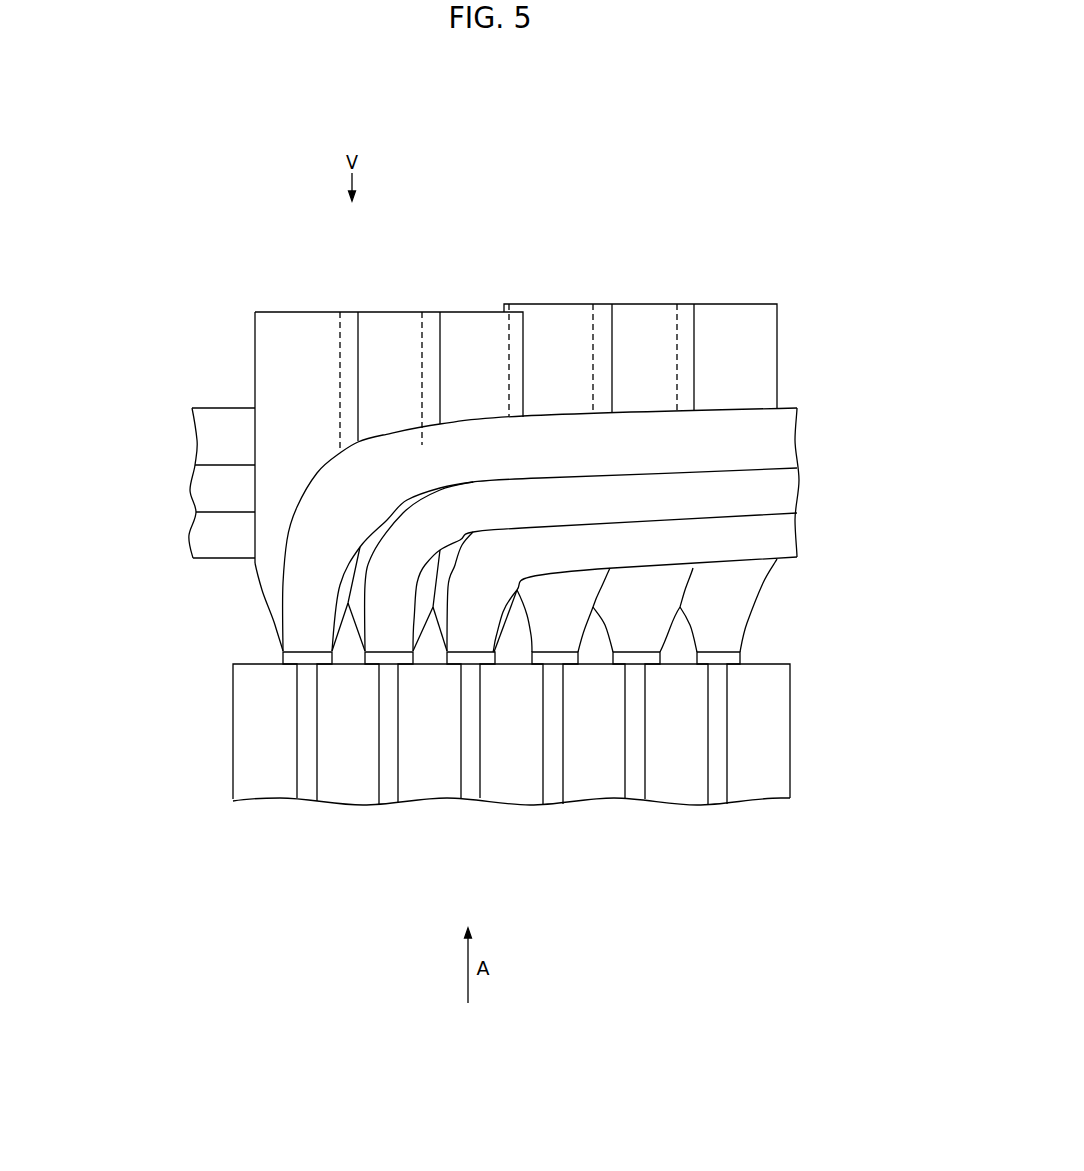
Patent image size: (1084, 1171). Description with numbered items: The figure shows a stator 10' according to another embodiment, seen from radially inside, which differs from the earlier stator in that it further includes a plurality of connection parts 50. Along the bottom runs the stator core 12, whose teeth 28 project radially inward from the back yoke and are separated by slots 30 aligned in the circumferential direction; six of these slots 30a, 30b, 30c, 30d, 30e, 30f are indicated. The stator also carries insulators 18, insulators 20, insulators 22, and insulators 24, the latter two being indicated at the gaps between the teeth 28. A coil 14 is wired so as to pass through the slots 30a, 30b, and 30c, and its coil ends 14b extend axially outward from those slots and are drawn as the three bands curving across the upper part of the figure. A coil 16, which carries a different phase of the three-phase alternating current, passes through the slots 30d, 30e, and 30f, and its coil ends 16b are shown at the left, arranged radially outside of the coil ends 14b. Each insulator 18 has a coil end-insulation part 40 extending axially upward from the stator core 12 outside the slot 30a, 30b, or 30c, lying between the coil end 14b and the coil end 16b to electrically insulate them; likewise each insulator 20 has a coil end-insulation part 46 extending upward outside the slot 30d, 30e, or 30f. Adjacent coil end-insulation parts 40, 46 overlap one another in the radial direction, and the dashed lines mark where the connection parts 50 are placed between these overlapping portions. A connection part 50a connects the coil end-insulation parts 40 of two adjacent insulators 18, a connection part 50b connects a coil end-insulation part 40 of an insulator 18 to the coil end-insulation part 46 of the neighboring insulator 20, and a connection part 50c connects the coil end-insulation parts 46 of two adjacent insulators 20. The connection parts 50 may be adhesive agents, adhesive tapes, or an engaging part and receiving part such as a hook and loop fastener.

The stator 10' is at (778, 96).
The stator core 12 is at (228, 689).
The coil 14 is at (807, 537).
The coil ends 14b is at (623, 451).
The coil 16 is at (187, 536).
The coil ends 16b is at (208, 451).
The insulators 18 is at (305, 309).
The insulators 20 is at (558, 301).
The insulators 22 is at (307, 786).
The insulators 24 is at (580, 662).
The teeth 28 is at (240, 745).
The slots 30 is at (475, 811).
The slot 30a is at (304, 684).
The slot 30b is at (388, 684).
The slot 30c is at (473, 684).
The slot 30d is at (555, 684).
The slot 30e is at (634, 684).
The slot 30f is at (717, 684).
The coil end-insulation part 40 is at (291, 373).
The coil end-insulation part 46 is at (554, 373).
The connection parts 50 is at (395, 195).
The connection part 50a is at (348, 308).
The connection part 50b is at (520, 305).
The connection part 50c is at (598, 305).